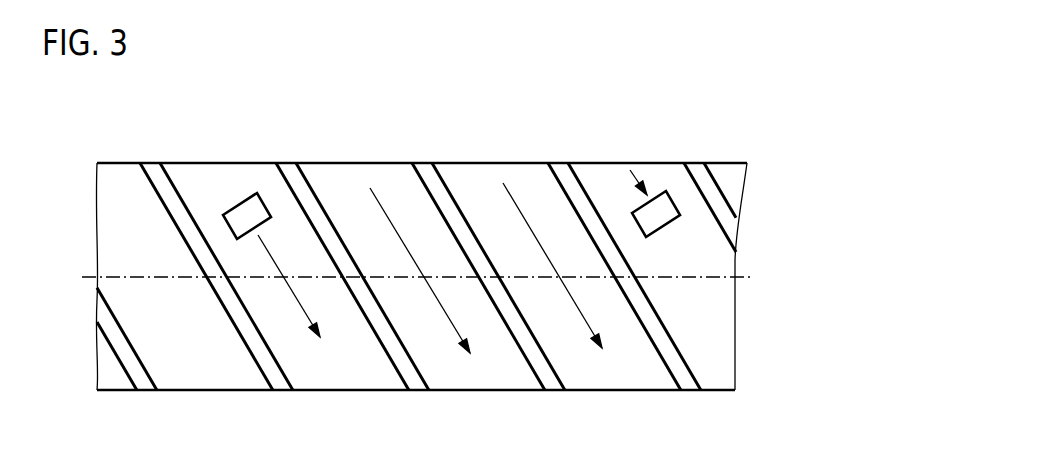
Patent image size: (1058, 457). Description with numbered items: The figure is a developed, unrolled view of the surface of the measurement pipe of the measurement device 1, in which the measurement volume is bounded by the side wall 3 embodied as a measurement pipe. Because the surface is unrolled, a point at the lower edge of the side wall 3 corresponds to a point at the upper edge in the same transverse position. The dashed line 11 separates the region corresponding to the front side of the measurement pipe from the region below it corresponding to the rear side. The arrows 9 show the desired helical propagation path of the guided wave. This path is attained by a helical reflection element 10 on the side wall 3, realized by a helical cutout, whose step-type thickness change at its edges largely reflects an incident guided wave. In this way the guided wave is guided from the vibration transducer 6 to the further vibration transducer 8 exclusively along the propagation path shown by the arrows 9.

The measurement device 1 is at (507, 137).
The side wall 3 is at (353, 183).
The vibration transducer 6 is at (237, 200).
The further vibration transducer 8 is at (663, 230).
The arrows 9 is at (452, 325).
The helical reflection element 10 is at (315, 193).
The dashed line 11 is at (712, 278).